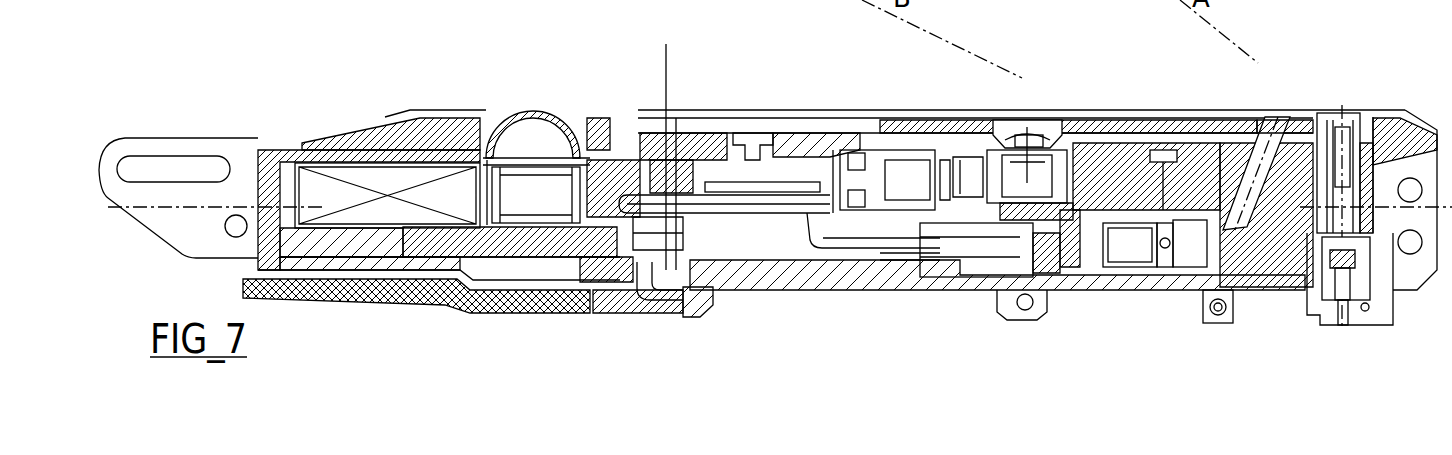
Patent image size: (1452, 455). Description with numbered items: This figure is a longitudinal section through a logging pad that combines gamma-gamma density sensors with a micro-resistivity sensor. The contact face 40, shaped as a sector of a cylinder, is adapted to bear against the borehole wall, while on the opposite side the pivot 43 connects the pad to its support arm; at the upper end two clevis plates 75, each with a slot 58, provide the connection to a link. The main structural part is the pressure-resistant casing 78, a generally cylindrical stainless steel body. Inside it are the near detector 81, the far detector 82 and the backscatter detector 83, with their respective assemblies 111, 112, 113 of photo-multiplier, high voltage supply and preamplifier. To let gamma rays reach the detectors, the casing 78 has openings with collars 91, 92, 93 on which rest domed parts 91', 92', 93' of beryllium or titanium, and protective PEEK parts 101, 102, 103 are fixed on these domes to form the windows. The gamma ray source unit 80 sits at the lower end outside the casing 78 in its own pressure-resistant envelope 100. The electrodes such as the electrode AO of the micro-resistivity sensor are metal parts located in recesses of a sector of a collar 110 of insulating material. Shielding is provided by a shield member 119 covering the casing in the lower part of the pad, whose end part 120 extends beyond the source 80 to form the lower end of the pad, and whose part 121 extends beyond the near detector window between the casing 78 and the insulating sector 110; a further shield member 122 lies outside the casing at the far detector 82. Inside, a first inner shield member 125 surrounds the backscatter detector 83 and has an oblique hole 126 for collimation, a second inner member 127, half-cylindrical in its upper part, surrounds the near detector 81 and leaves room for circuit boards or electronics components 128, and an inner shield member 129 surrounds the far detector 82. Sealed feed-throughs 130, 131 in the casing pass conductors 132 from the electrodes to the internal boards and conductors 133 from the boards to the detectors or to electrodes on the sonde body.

The slot 58 is at (152, 163).
The clevis plate 75 is at (200, 143).
The shield member 122 is at (370, 128).
The far detector 82 is at (497, 190).
The domed part 92' is at (533, 108).
The protective part 102 is at (567, 110).
The contact face 40 is at (572, 116).
The collar 92 is at (615, 98).
The conductors 132 is at (670, 138).
The collar of insulating material 110 is at (674, 112).
The electrode AO is at (698, 110).
The sealed feed-through 131 is at (697, 143).
The shield part 121 is at (890, 127).
The collar 91 is at (1005, 101).
The domed part 91' is at (1026, 96).
The protective part 101 is at (1043, 117).
The near detector 81 is at (1053, 170).
The second inner shield member 127 is at (1120, 170).
The shield member 119 is at (1168, 108).
The backscatter detector 83 is at (1217, 247).
The domed part 93' is at (1256, 123).
The protective part 103 is at (1293, 112).
The collar 93 is at (1336, 184).
The pressure-resistant envelope 100 is at (1370, 197).
The end part 120 is at (1432, 113).
The assembly 112 is at (392, 213).
The inner shield member 129 is at (533, 250).
The conductors 133 is at (630, 302).
The sealed feed-through 130 is at (673, 268).
The pressure-resistant casing 78 is at (840, 288).
The assembly 111 is at (907, 187).
The circuit boards or electronics components 128 is at (940, 243).
The pivot 43 is at (1025, 310).
The assembly 113 is at (1130, 253).
The oblique hole 126 is at (1210, 290).
The first inner shield member 125 is at (1272, 240).
The gamma ray source unit 80 is at (1380, 268).